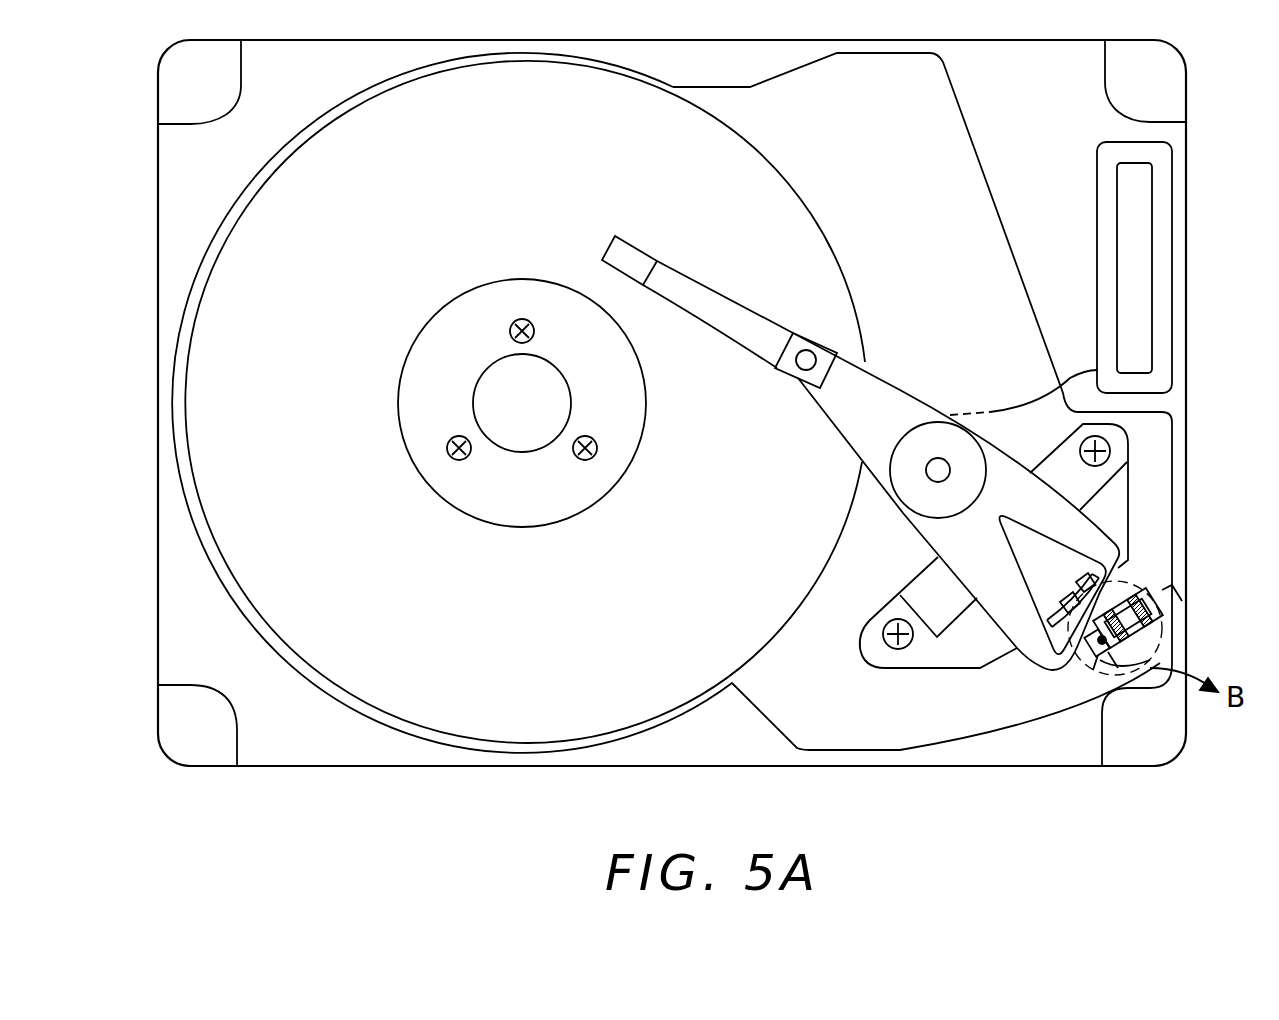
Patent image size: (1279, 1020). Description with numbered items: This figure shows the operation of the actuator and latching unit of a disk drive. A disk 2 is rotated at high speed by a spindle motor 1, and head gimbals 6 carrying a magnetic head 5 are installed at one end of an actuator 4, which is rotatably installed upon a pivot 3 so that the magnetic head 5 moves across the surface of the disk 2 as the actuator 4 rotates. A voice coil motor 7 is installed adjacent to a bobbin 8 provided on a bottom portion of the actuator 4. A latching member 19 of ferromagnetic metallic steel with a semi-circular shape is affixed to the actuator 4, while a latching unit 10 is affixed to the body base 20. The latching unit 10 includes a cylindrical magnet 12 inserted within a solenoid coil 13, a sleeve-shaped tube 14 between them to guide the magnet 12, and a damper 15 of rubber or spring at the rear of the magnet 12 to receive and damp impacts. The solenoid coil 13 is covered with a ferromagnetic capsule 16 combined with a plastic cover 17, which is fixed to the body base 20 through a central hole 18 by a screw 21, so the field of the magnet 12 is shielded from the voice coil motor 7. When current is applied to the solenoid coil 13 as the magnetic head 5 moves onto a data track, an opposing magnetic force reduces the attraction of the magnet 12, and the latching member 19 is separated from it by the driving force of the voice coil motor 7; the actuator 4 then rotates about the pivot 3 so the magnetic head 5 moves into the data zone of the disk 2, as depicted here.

The spindle motor 1 is at (533, 419).
The disk 2 is at (803, 218).
The pivot 3 is at (940, 466).
The actuator 4 is at (897, 404).
The magnetic head 5 is at (636, 256).
The head gimbals 6 is at (733, 308).
The voice coil motor 7 is at (957, 668).
The bobbin 8 is at (1033, 660).
The latching unit 10 is at (1160, 592).
The magnet 12 is at (1112, 652).
The solenoid coil 13 is at (1168, 612).
The tube 14 is at (1138, 585).
The damper 15 is at (1175, 592).
The capsule 16 is at (1165, 626).
The cover 17 is at (1165, 648).
The hole 18 is at (1116, 662).
The latching member 19 is at (1085, 660).
The body base 20 is at (1187, 452).
The screw 21 is at (1100, 656).